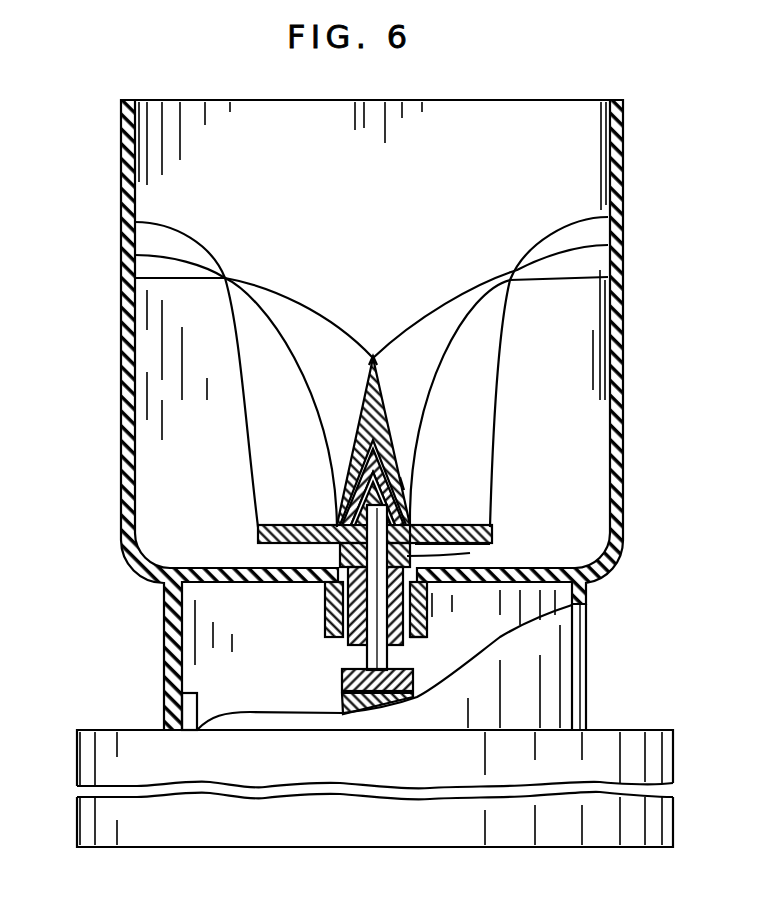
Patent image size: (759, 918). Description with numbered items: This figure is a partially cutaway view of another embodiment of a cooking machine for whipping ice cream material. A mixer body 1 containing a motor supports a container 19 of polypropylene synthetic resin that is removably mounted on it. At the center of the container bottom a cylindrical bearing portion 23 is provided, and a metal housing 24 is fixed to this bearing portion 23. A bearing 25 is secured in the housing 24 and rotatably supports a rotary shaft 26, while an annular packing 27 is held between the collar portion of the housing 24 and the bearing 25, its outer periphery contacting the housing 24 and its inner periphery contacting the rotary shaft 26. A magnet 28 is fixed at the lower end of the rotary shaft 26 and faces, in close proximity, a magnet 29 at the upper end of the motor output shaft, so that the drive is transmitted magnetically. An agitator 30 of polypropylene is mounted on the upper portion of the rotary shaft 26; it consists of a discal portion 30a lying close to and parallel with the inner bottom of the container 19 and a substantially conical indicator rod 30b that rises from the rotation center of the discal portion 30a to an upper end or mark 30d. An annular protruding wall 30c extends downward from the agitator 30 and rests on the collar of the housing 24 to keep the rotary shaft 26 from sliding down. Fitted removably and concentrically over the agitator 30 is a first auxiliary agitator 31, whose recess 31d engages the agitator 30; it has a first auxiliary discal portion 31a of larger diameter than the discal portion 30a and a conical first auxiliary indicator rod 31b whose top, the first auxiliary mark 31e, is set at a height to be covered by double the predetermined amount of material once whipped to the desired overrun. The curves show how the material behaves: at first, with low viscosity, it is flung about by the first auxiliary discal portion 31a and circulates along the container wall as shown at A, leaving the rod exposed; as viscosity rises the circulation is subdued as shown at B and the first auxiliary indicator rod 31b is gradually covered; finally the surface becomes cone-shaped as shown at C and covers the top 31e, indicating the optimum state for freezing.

The mixer body 1 is at (665, 760).
The container 19 is at (618, 167).
The cylindrical bearing portion 23 is at (437, 668).
The housing 24 is at (410, 618).
The bearing 25 is at (428, 640).
The rotary shaft 26 is at (370, 660).
The annular packing 27 is at (426, 584).
The magnet 28 is at (343, 681).
The magnet 29 is at (343, 705).
The agitator 30 is at (410, 508).
The discal portion 30a is at (490, 544).
The indicator rod 30b is at (400, 477).
The annular protruding wall 30c is at (470, 553).
The mark 30d is at (394, 441).
The first auxiliary agitator 31 is at (337, 505).
The first auxiliary discal portion 31a is at (258, 530).
The first auxiliary indicator rod 31b is at (350, 463).
The recess 31d is at (346, 481).
The first auxiliary mark 31e is at (373, 356).
The initial material flow A is at (240, 357).
The subdued material circulation B is at (286, 333).
The cone-shaped material surface C is at (293, 300).